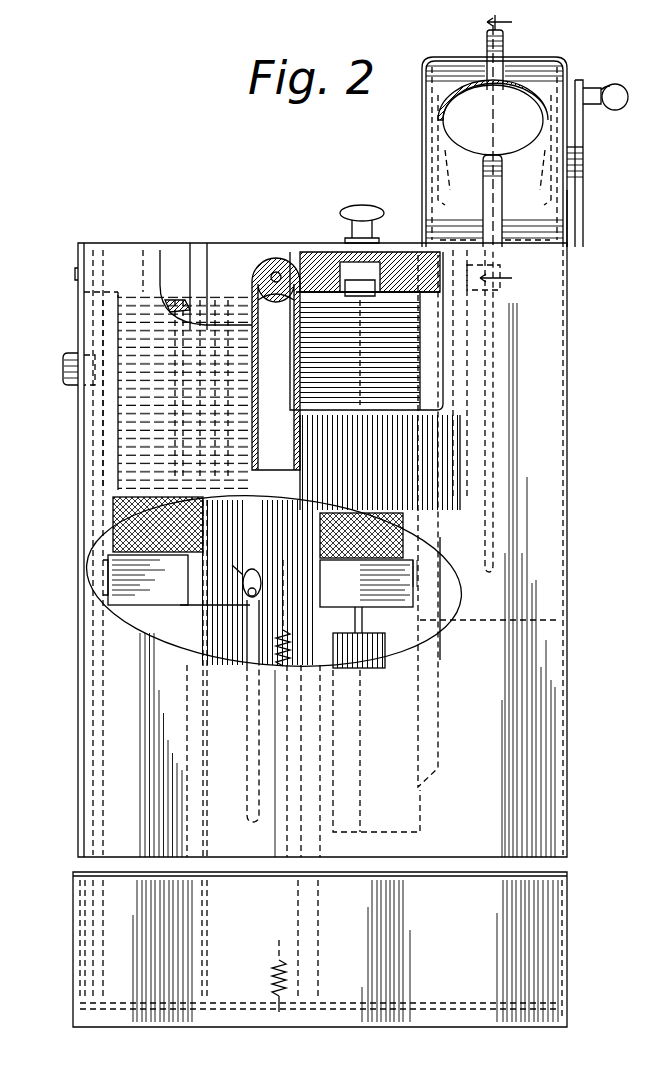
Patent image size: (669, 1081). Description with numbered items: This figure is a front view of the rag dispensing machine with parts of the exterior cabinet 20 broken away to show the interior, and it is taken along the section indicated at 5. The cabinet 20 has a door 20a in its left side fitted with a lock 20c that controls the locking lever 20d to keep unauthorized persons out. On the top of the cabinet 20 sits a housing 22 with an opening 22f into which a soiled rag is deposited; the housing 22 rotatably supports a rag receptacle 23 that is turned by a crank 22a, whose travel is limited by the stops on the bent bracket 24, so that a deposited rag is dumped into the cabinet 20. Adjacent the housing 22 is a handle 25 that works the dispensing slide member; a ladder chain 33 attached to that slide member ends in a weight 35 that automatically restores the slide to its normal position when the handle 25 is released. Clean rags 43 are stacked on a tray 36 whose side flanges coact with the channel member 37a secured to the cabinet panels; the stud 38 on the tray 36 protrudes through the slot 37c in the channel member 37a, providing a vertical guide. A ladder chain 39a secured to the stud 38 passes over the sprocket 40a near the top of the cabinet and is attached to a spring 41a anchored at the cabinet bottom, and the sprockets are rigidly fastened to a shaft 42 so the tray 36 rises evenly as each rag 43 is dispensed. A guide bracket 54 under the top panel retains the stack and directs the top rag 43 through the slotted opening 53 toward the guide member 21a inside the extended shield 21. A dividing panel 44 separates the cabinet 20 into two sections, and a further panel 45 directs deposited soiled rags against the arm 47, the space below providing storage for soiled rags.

The section line 5 is at (499, 151).
The cabinet 20 is at (568, 738).
The door 20a is at (75, 272).
The lock 20c is at (66, 378).
The locking lever 20d is at (100, 430).
The extended shield 21 is at (435, 480).
The guide member 21a is at (405, 352).
The housing 22 is at (555, 57).
The crank 22a is at (583, 125).
The opening 22f is at (462, 95).
The rag receptacle 23 is at (560, 217).
The bracket 24 is at (580, 180).
The handle 25 is at (368, 198).
The ladder chain 33 is at (355, 625).
The weight 35 is at (385, 645).
The tray 36 is at (108, 555).
The channel member 37a is at (205, 625).
The slot 37c is at (248, 640).
The pivot 38 is at (240, 570).
The ladder chain 39a is at (278, 272).
The sprocket 40a is at (258, 262).
The spring 41a is at (270, 990).
The shaft 42 is at (288, 262).
The clean rag 43 is at (108, 550).
The dividing panel 44 is at (425, 665).
The panel 45 is at (540, 622).
The arm 47 is at (493, 525).
The slotted opening 53 is at (405, 292).
The guide bracket 54 is at (158, 255).